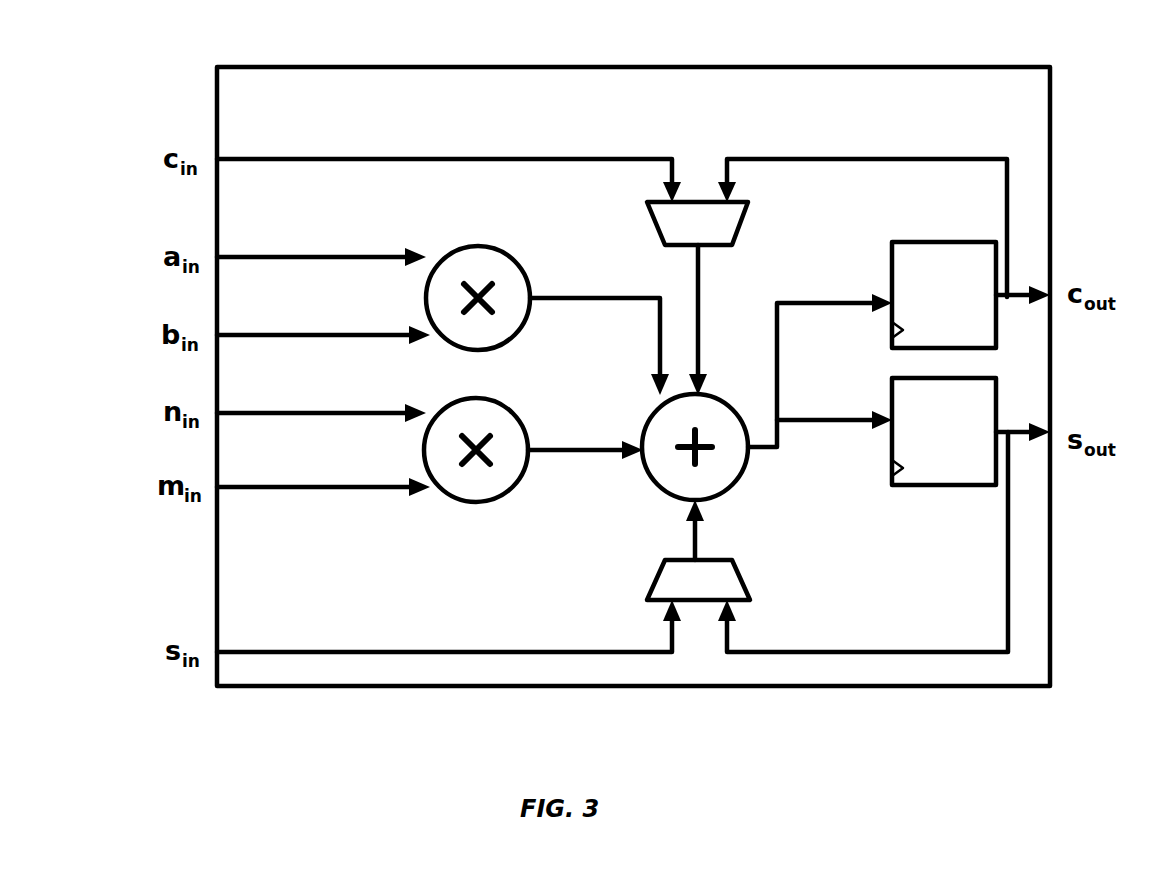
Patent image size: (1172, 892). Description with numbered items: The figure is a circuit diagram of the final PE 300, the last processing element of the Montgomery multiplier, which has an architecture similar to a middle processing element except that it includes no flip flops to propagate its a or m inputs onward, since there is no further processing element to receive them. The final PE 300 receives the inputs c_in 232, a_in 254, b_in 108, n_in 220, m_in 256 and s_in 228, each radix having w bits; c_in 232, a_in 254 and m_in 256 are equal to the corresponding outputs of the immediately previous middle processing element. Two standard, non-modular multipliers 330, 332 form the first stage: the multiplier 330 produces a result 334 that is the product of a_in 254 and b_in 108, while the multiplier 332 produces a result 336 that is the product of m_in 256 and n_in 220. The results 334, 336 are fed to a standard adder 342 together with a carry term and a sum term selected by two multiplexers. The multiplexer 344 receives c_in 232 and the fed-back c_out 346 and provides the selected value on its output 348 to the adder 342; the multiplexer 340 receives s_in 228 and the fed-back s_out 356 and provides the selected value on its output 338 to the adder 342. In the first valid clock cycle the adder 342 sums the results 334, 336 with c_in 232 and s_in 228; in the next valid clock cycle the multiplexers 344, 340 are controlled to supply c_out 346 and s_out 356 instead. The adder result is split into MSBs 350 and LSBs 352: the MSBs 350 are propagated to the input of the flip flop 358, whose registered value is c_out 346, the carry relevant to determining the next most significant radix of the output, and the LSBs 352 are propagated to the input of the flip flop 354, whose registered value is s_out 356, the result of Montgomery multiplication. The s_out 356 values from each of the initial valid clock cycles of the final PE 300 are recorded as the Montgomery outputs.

The final PE 300 is at (1049, 102).
The c_in 232 is at (357, 157).
The a_in 254 is at (400, 258).
The b_in 108 is at (287, 337).
The n_in 220 is at (297, 415).
The m_in 256 is at (258, 489).
The s_in 228 is at (305, 654).
The multiplier 330 is at (478, 247).
The multiplier 332 is at (472, 400).
The result 334 is at (540, 300).
The result 336 is at (633, 455).
The output of multiplexer 338 is at (693, 522).
The multiplexer 340 is at (745, 595).
The adder 342 is at (663, 488).
The multiplexer 344 is at (747, 210).
The c_out 346 is at (900, 157).
The output of multiplexer 348 is at (700, 343).
The MSBs 350 is at (815, 303).
The LSBs 352 is at (840, 423).
The flip flop 354 is at (987, 487).
The s_out 356 is at (1010, 603).
The flip flop 358 is at (900, 243).